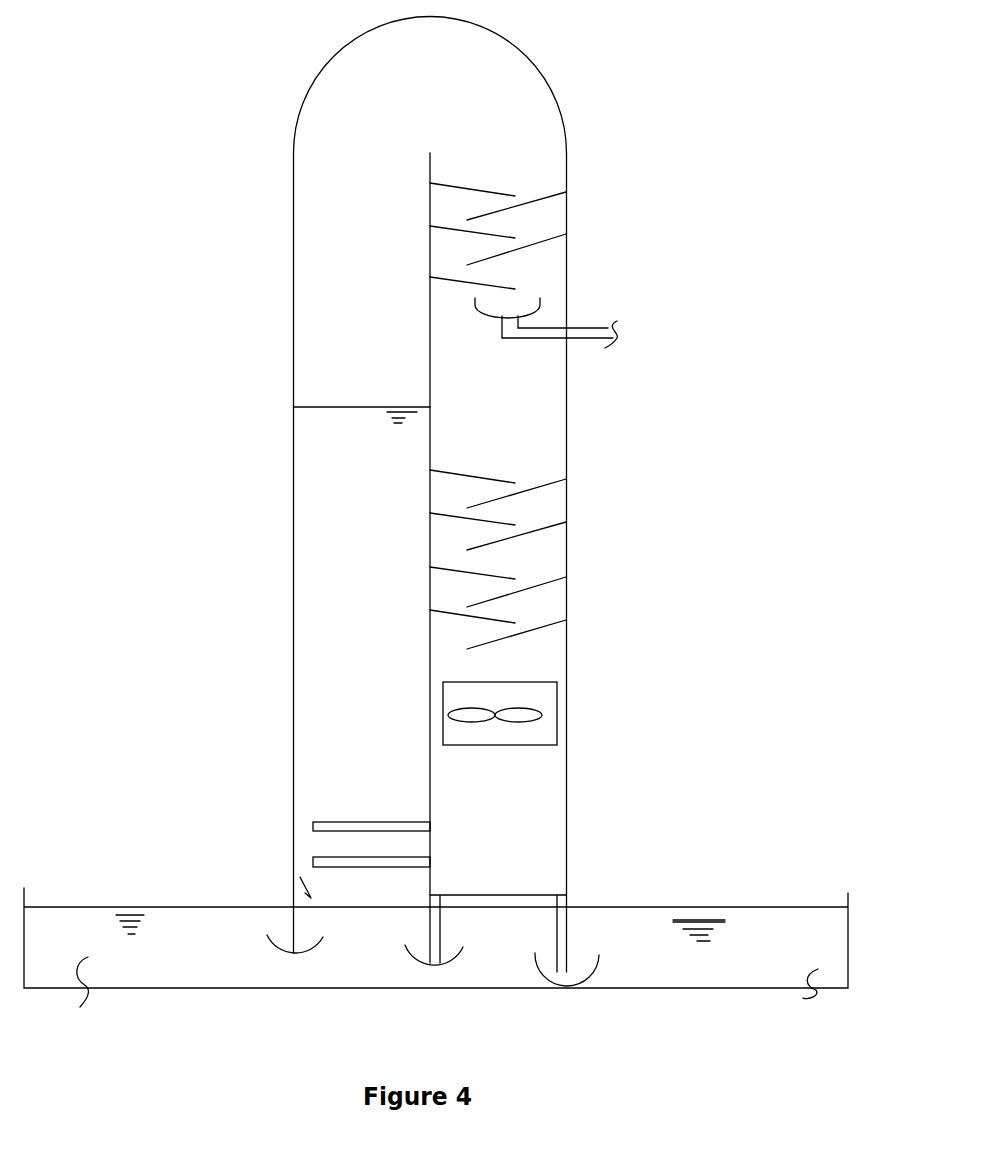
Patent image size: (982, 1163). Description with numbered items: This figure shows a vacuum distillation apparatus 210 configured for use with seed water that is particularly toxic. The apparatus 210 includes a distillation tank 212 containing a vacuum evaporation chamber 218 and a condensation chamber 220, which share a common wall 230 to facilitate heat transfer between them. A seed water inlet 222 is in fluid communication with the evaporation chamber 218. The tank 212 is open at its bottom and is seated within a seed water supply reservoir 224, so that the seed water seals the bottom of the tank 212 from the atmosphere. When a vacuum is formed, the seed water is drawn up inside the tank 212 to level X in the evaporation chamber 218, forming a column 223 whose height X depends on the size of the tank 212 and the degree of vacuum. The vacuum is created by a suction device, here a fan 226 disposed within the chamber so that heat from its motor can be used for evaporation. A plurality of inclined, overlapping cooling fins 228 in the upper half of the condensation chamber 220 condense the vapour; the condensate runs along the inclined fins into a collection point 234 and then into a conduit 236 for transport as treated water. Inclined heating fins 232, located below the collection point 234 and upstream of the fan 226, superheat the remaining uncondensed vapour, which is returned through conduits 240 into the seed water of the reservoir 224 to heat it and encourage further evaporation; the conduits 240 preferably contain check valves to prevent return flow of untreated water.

The vacuum distillation apparatus 210 is at (252, 70).
The distillation tank 212 is at (293, 137).
The vacuum evaporation chamber 218 is at (350, 252).
The condensation chamber 220 is at (540, 413).
The seed water inlet 222 is at (353, 907).
The column 223 is at (316, 448).
The seed water supply reservoir 224 is at (65, 907).
The fan 226 is at (543, 695).
The cooling fins 228 is at (535, 242).
The common wall 230 is at (430, 363).
The heating fins 232 is at (527, 490).
The collection point 234 is at (518, 310).
The conduit 236 is at (593, 332).
The conduits 240 is at (330, 857).
The level X is at (355, 408).